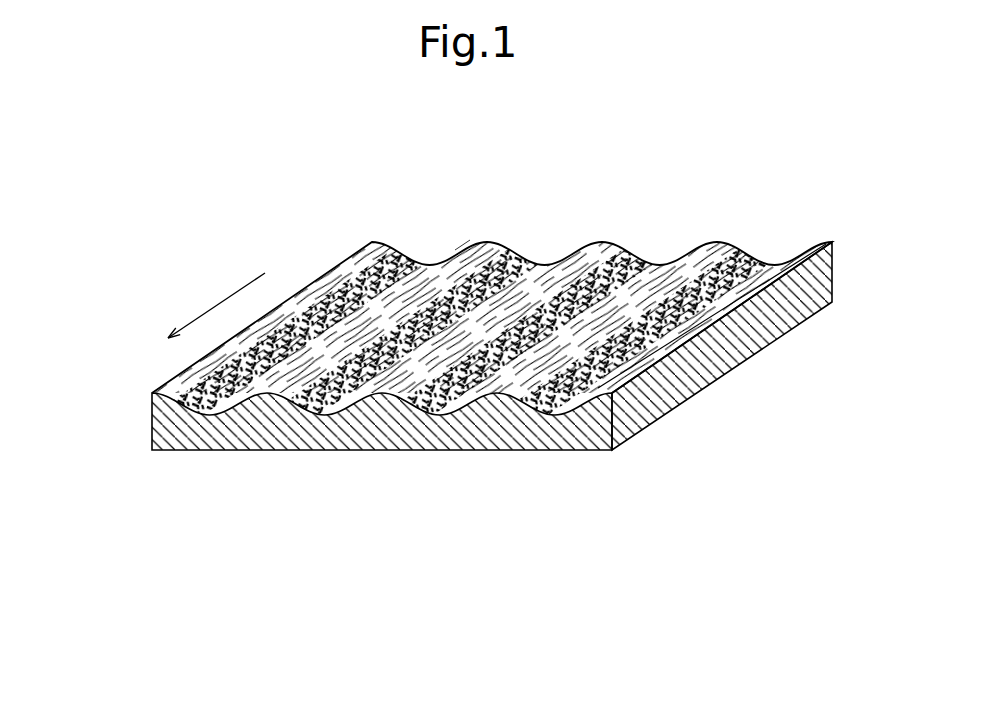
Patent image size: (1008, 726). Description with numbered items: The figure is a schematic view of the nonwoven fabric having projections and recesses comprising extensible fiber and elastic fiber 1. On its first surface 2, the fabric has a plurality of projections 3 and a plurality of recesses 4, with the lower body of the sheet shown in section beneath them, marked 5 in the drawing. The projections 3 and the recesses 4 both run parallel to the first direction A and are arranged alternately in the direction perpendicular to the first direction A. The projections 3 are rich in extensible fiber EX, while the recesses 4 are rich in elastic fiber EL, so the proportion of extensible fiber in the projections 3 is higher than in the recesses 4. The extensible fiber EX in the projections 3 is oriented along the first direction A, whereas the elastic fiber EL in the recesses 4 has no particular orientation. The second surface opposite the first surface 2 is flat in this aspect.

The nonwoven fabric having projections and recesses comprising extensible fiber and 1 is at (487, 343).
The first surface 2 is at (501, 270).
The projections 3 is at (490, 237).
The recesses 4 is at (430, 418).
The base body 5 is at (180, 468).
The first direction A is at (216, 305).
The extensible fiber EX is at (462, 258).
The elastic fiber EL is at (638, 262).